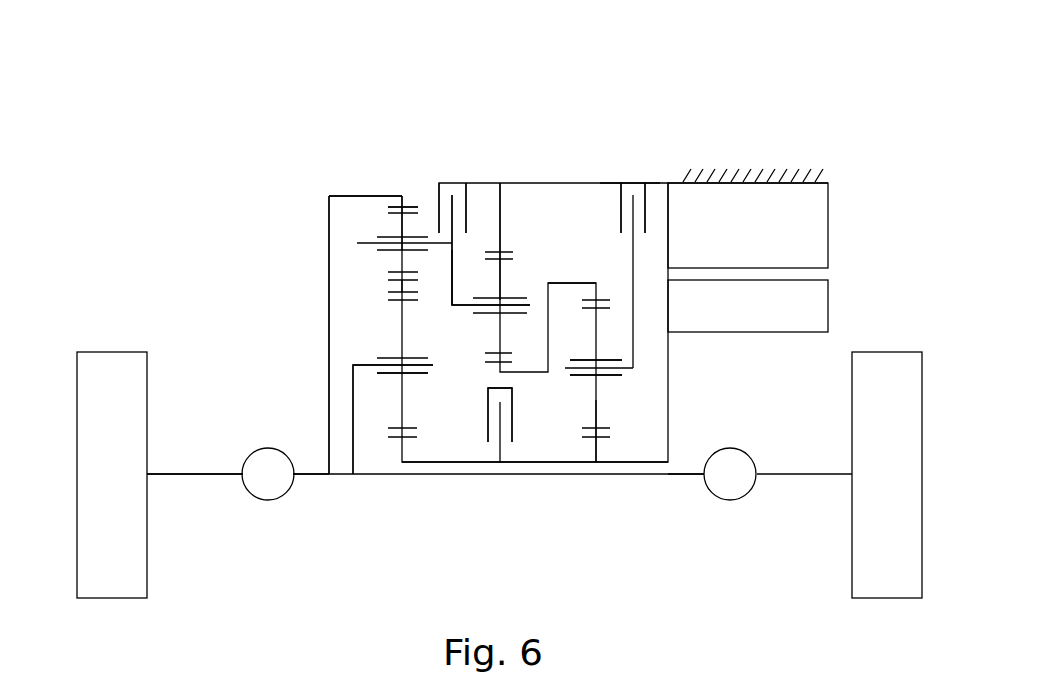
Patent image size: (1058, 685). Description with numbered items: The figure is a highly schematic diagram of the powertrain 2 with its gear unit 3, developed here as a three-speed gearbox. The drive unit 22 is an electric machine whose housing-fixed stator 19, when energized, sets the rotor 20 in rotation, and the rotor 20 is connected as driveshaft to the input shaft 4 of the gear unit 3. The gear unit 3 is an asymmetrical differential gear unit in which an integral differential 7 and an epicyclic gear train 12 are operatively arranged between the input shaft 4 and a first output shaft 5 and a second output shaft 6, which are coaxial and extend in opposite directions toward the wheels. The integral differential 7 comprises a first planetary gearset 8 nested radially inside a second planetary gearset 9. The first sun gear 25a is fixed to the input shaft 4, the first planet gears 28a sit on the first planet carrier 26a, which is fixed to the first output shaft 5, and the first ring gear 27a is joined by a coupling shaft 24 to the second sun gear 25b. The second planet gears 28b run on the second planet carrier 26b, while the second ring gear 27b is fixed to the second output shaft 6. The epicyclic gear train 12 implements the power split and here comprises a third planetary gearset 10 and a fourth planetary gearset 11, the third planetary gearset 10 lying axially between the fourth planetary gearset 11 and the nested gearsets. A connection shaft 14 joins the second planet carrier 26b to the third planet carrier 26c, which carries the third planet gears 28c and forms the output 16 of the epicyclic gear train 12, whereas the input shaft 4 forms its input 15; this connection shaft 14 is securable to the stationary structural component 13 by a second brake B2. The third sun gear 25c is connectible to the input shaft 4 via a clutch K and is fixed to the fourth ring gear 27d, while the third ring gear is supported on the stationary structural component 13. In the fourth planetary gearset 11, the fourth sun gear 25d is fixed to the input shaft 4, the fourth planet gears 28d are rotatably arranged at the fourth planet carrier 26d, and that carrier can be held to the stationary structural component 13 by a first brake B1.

The powertrain 2 is at (168, 102).
The gear unit 3 is at (268, 133).
The input shaft 4 is at (620, 463).
The first output shaft 5 is at (693, 475).
The second output shaft 6 is at (308, 478).
The integral differential 7 is at (388, 192).
The first planetary gearset 8 is at (370, 450).
The second planetary gearset 9 is at (418, 195).
The third planetary gearset 10 is at (507, 217).
The fourth planetary gearset 11 is at (583, 230).
The epicyclic gear train 12 is at (630, 158).
The stationary structural component 13 is at (753, 178).
The connection shaft 14 is at (452, 305).
The input of the epicyclic gear train 15 is at (620, 463).
The output of the epicyclic gear train 16 is at (452, 305).
The stator 19 is at (807, 217).
The rotor 20 is at (807, 303).
The drive unit 22 is at (833, 170).
The coupling shaft 24 is at (402, 286).
The first sun gear 25a is at (393, 438).
The second sun gear 25b is at (383, 281).
The third sun gear 25c is at (495, 360).
The fourth sun gear 25d is at (583, 440).
The first planet carrier 26a is at (353, 376).
The second planet carrier 26b is at (380, 247).
The third planet carrier 26c is at (530, 305).
The fourth planet carrier 26d is at (637, 368).
The first ring gear 27a is at (402, 290).
The second ring gear 27b is at (408, 205).
The fourth ring gear 27d is at (610, 295).
The first planet gears 28a is at (400, 343).
The second planet gears 28b is at (400, 222).
The third planet gears 28c is at (498, 333).
The fourth planet gears 28d is at (570, 395).
The first brake B1 is at (650, 207).
The second brake B2 is at (473, 210).
The clutch K is at (513, 452).